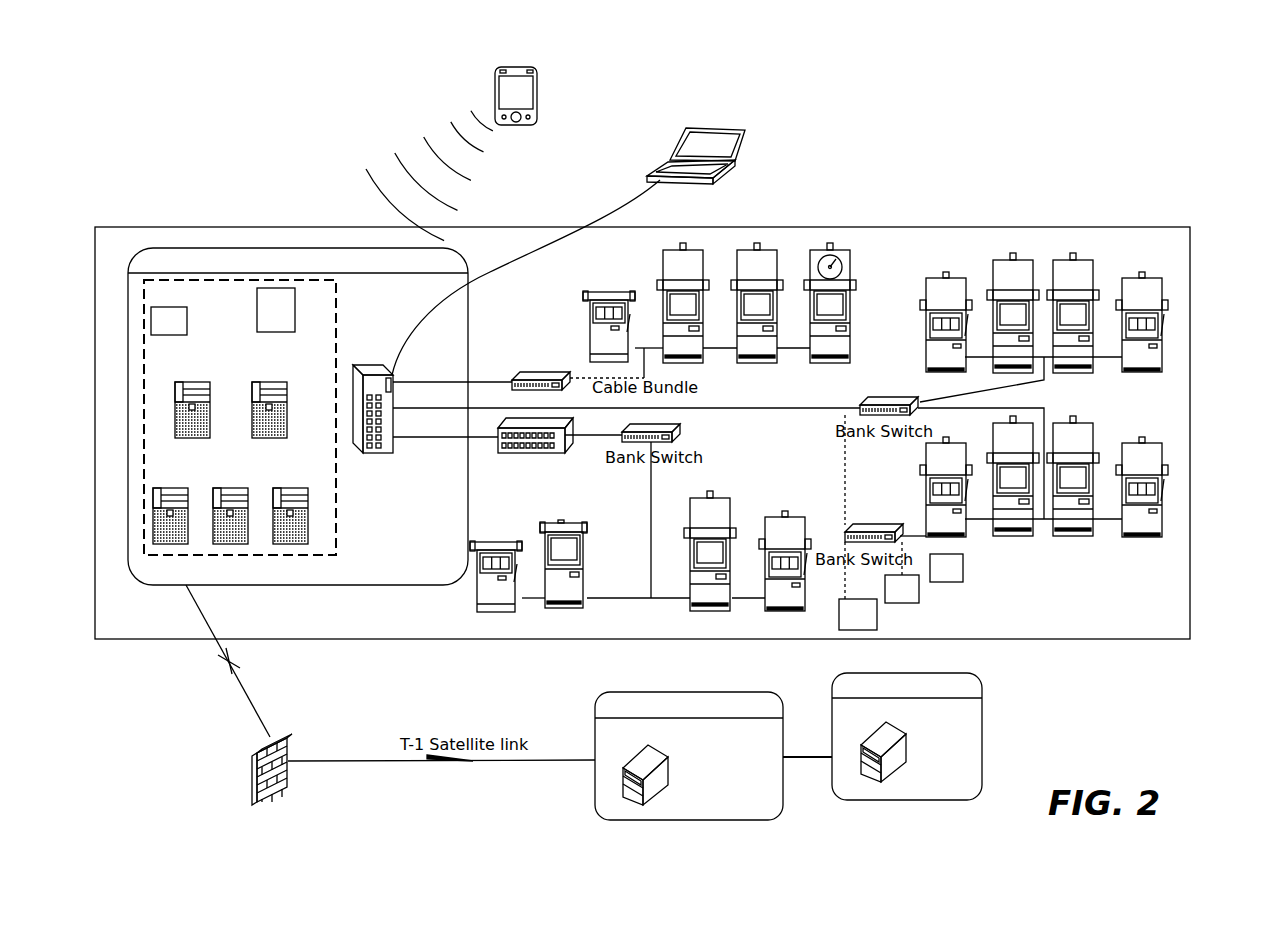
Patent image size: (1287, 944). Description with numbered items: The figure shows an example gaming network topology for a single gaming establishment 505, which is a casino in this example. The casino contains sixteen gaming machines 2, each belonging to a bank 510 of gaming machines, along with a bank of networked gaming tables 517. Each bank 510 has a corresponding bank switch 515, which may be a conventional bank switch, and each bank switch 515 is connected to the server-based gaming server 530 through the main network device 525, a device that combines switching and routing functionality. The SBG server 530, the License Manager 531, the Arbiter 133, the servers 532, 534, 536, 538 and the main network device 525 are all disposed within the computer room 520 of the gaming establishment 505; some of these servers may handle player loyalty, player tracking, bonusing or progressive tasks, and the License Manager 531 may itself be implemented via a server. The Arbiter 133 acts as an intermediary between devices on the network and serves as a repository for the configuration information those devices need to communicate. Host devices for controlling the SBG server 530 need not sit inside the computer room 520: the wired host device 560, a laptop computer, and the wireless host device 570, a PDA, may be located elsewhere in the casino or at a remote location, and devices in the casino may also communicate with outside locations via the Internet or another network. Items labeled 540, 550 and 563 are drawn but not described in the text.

The gaming machine 2 is at (608, 292).
The Arbiter 133 is at (275, 312).
The gaming establishment 505 is at (950, 240).
The bank of gaming machines 510 is at (702, 240).
The bank switch 515 is at (528, 372).
The gaming tables 517 is at (877, 620).
The computer room 520 is at (219, 245).
The main network device 525 is at (393, 375).
The SBG server 530 is at (193, 382).
The License Manager 531 is at (187, 315).
The server 532 is at (270, 382).
The server 534 is at (170, 488).
The server 536 is at (230, 488).
The server 538 is at (290, 488).
The firewall 540 is at (258, 775).
The Reno SBG gateway 550 is at (595, 800).
The wired host device 560 is at (746, 133).
The IGT.COM/CRM server 563 is at (982, 712).
The wireless host device 570 is at (537, 118).